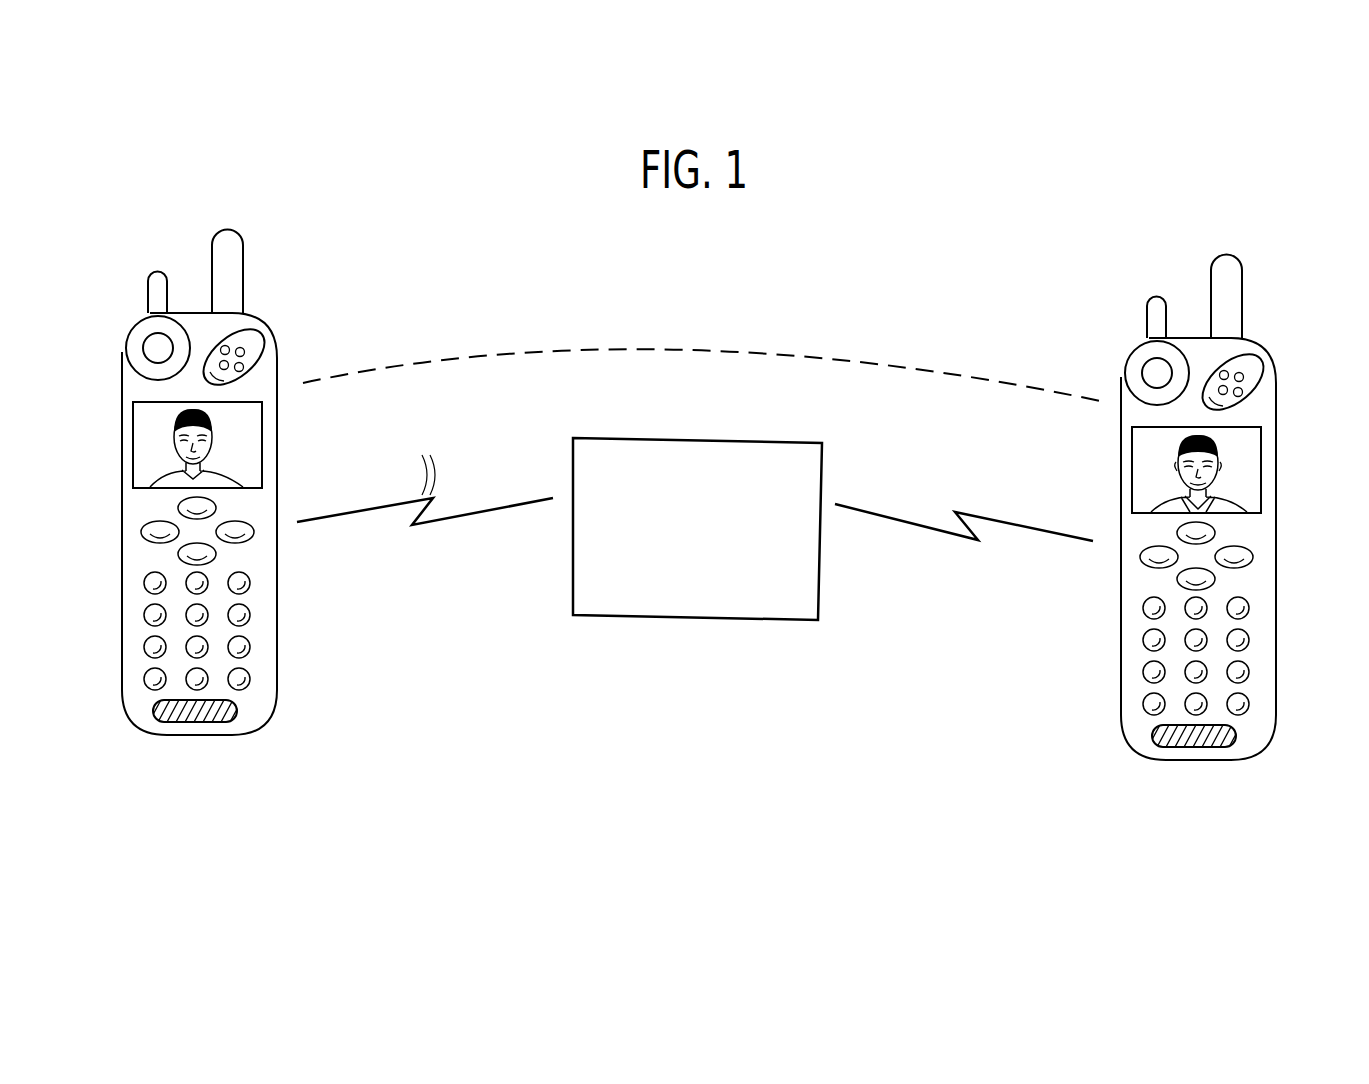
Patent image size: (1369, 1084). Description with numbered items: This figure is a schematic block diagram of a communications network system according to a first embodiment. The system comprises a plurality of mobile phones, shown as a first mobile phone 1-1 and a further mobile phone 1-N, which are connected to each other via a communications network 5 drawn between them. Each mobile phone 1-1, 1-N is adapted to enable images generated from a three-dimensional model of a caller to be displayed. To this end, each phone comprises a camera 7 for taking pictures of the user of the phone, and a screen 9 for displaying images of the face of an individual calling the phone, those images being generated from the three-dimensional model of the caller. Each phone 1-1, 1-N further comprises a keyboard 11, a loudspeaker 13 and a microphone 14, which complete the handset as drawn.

The mobile phone 1-1 is at (122, 405).
The mobile phone 1-N is at (1278, 472).
The communications network 5 is at (762, 440).
The camera 7 is at (147, 330).
The screen 9 is at (250, 452).
The keyboard 11 is at (145, 600).
The loudspeaker 13 is at (252, 345).
The microphone 14 is at (188, 720).